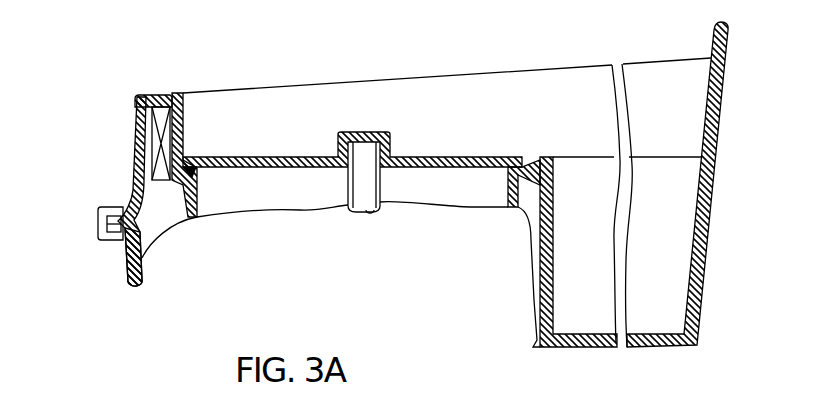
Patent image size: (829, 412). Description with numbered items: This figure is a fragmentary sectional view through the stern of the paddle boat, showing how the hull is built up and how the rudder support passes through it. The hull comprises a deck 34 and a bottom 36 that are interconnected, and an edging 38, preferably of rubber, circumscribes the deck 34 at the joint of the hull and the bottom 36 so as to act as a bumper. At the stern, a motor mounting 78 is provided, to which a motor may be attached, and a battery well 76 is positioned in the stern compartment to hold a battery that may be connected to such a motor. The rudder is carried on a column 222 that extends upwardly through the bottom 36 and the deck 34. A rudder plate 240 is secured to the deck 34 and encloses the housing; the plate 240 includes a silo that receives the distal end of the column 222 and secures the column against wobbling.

The deck 34 is at (721, 52).
The bottom 36 is at (142, 277).
The edging 38 is at (97, 223).
The battery well 76 is at (667, 223).
The motor mounting 78 is at (148, 96).
The column 222 is at (368, 192).
The rudder plate 240 is at (434, 160).